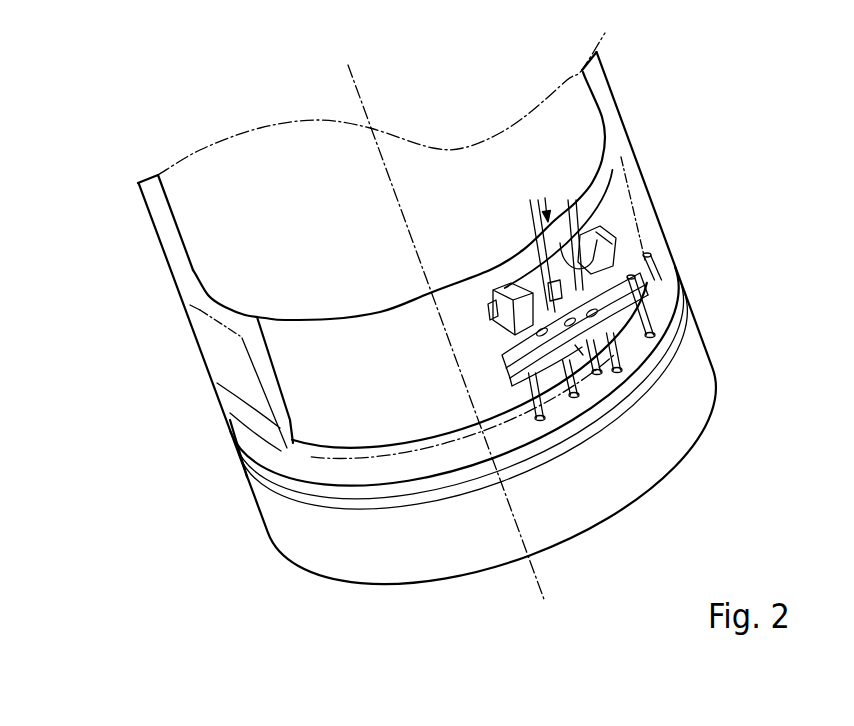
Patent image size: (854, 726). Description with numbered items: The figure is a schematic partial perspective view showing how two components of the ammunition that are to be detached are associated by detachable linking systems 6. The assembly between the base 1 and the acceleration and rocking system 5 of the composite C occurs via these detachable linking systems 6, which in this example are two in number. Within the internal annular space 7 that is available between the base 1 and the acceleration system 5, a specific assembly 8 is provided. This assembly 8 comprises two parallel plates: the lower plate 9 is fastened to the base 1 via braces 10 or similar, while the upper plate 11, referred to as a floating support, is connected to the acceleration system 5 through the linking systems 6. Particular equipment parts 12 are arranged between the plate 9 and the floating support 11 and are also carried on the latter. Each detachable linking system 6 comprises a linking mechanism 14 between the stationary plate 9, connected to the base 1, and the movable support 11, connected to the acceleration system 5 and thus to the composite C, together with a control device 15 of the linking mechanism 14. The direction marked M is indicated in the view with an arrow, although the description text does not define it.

The base 1 is at (362, 563).
The acceleration and rocking system 5 is at (198, 251).
The detachable linking system 6 is at (531, 240).
The internal annular space 7 is at (613, 198).
The specific assembly 8 is at (490, 392).
The lower plate 9 is at (568, 347).
The braces 10 is at (627, 343).
The floating support 11 is at (633, 275).
The equipment parts 12 is at (492, 322).
The linking mechanism 14 is at (510, 279).
The control device 15 is at (519, 270).
The composite C is at (134, 200).
The measuring direction M is at (186, 448).